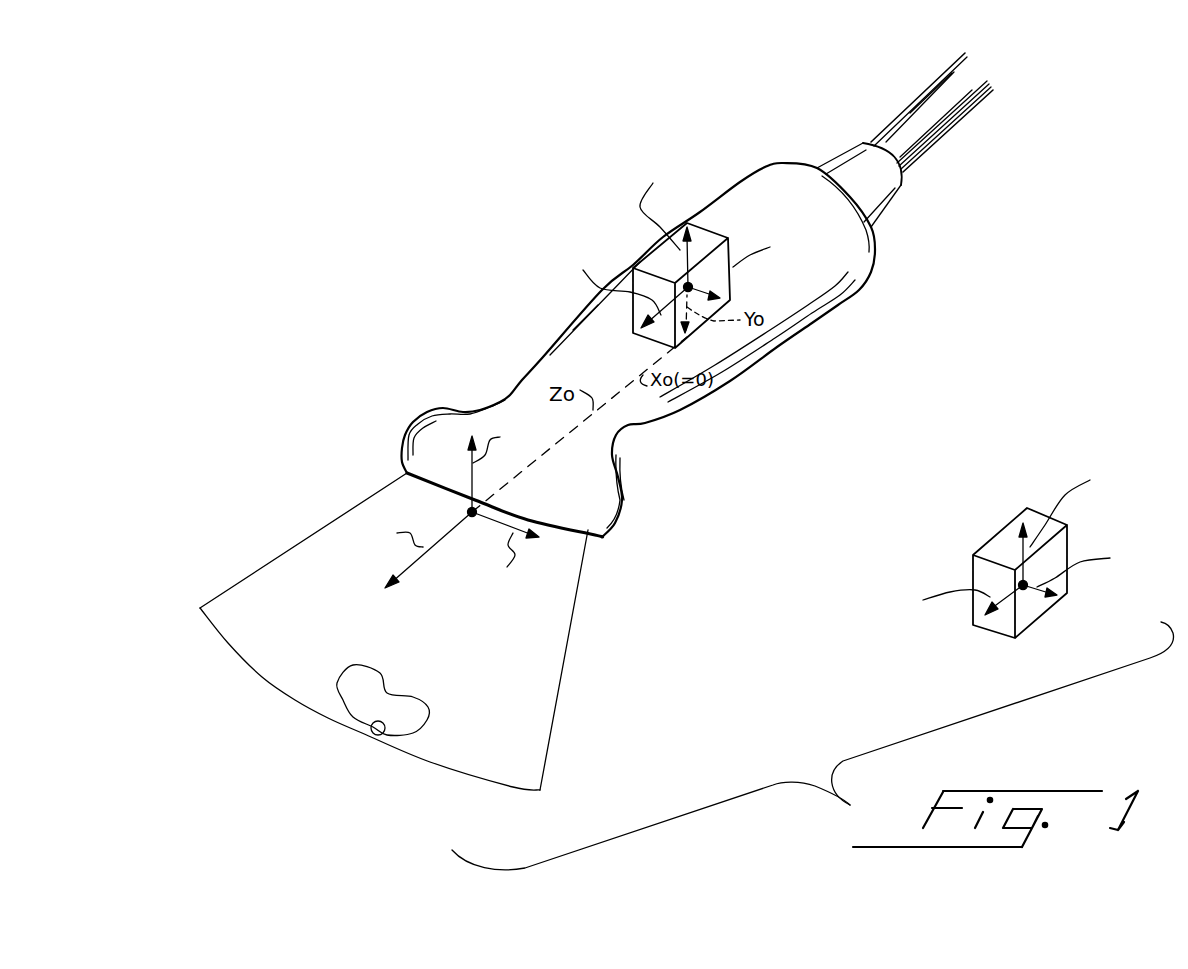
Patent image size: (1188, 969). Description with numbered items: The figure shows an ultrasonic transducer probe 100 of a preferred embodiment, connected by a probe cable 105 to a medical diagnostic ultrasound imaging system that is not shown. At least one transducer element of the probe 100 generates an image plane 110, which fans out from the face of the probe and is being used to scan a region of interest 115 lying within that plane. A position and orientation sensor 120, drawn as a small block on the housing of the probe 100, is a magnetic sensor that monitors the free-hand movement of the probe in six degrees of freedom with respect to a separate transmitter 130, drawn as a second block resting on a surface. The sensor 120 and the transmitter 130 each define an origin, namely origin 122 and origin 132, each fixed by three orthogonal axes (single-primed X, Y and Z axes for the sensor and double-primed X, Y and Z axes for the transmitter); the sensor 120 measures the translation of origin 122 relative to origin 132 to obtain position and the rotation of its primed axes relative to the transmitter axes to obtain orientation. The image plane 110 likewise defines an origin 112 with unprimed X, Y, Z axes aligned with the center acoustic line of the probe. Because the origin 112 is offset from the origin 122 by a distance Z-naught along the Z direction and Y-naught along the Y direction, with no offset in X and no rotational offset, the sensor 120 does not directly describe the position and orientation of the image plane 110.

The ultrasonic transducer probe 100 is at (847, 270).
The probe cable 105 is at (950, 107).
The image plane 110 is at (553, 728).
The origin 112 is at (470, 527).
The region of interest 115 is at (377, 733).
The position and orientation sensor 120 is at (700, 233).
The origin 122 is at (730, 253).
The transmitter 130 is at (978, 548).
The origin 132 is at (1023, 592).